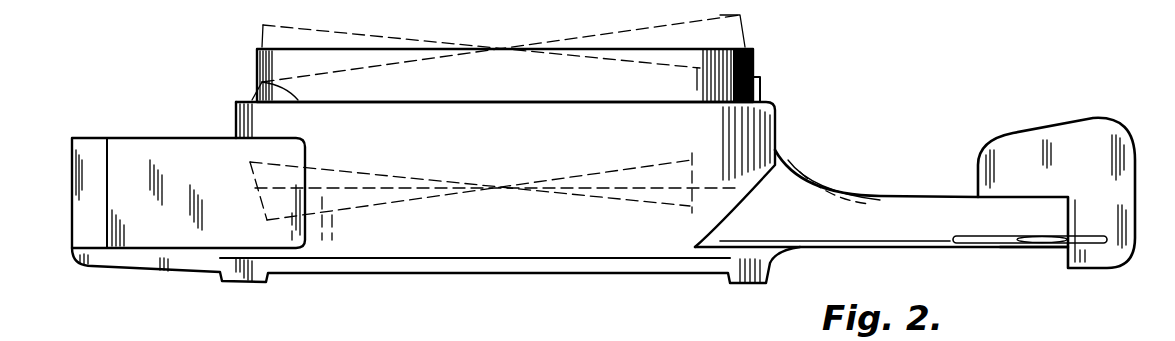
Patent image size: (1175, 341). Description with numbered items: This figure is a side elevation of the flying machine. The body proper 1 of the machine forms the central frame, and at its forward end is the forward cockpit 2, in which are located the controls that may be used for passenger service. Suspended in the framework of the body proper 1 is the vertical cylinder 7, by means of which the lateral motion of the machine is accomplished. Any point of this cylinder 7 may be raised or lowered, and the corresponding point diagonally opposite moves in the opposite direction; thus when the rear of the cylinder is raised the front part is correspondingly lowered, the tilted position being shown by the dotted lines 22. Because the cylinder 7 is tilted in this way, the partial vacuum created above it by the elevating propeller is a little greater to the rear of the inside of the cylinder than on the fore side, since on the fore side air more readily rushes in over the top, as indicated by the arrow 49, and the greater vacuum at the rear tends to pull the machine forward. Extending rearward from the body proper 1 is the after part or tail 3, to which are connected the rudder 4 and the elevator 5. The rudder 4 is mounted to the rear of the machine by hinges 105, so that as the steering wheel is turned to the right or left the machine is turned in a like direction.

The body proper 1 is at (436, 192).
The forward cockpit 2 is at (125, 155).
The after part or tail 3 is at (830, 202).
The rudder 4 is at (1015, 152).
The elevator 5 is at (1046, 248).
The vertical cylinder 7 is at (757, 60).
The dotted lines 22 is at (745, 25).
The arrow 49 is at (262, 80).
The hinges 105 is at (1065, 240).